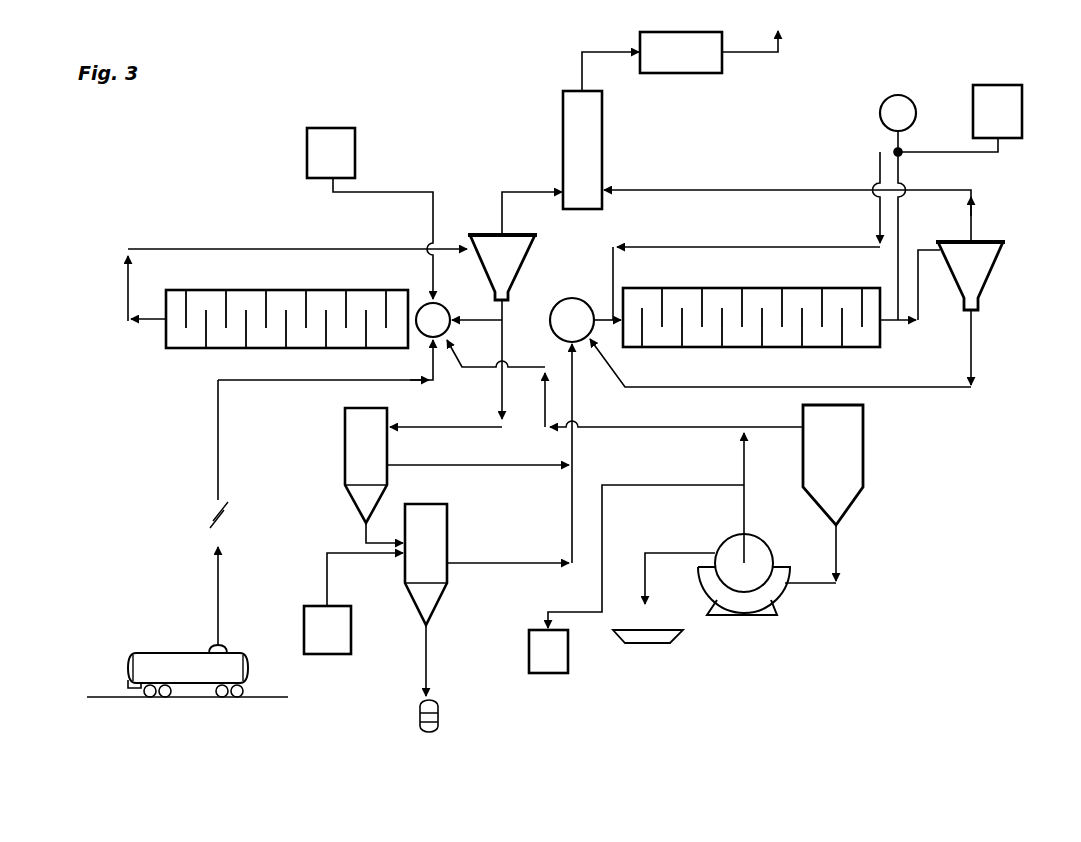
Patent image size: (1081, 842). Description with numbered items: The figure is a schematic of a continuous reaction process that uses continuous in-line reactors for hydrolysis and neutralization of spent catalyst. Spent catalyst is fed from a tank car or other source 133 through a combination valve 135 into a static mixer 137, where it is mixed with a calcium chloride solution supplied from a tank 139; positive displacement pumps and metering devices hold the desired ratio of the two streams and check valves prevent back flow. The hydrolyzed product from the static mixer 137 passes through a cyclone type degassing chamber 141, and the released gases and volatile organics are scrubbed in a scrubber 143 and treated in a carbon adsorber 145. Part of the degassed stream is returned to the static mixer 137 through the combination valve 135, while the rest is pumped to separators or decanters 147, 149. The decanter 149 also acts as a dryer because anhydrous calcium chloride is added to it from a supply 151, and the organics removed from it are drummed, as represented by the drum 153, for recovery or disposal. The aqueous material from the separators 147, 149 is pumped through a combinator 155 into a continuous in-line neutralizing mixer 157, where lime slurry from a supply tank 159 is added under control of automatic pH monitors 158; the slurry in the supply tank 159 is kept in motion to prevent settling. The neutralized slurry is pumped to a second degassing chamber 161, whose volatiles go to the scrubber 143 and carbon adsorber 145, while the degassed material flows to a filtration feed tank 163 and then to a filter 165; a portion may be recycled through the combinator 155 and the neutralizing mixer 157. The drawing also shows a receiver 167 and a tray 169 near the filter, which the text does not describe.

The tank car 133 is at (170, 650).
The combination valve 135 is at (439, 308).
The static mixer 137 is at (221, 290).
The tank 139 is at (330, 128).
The cyclone type degassing chamber 141 is at (493, 235).
The scrubber 143 is at (563, 124).
The carbon adsorber 145 is at (700, 73).
The separator 147 is at (345, 444).
The decanter 149 is at (447, 538).
The supply 151 is at (351, 636).
The drum 153 is at (438, 718).
The combinator 155 is at (574, 299).
The continuous in-line neutralizing mixer 157 is at (726, 288).
The automatic pH monitors 158 is at (898, 95).
The supply tank 159 is at (1000, 85).
The degassing chamber 161 is at (996, 270).
The filtration feed tank 163 is at (863, 461).
The filter 165 is at (766, 552).
The receiver 167 is at (568, 664).
The tray 169 is at (674, 636).